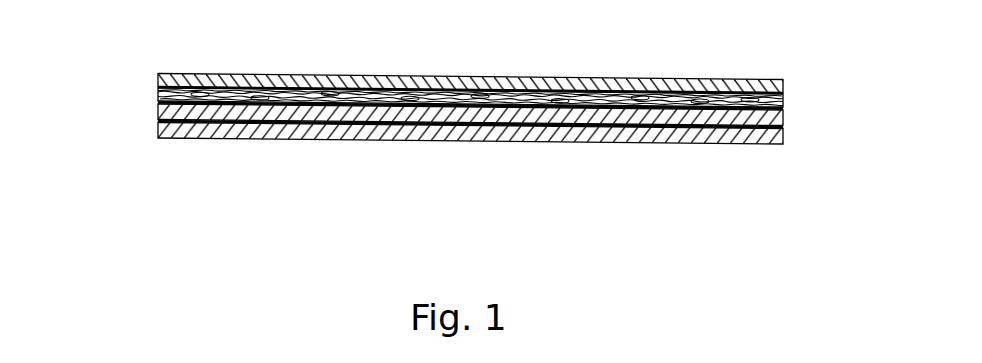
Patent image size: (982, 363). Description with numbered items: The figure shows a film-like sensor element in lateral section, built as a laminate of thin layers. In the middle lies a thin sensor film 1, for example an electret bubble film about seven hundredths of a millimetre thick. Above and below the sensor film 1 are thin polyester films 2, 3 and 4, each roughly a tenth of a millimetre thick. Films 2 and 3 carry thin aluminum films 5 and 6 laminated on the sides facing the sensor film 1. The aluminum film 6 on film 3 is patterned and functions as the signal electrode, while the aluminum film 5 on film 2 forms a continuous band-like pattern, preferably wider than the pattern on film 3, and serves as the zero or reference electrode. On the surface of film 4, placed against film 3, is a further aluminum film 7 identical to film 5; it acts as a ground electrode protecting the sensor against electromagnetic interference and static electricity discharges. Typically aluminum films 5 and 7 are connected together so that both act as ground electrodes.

The sensor film 1 is at (775, 103).
The polyester film 2 is at (782, 87).
The polyester film 3 is at (777, 119).
The polyester film 4 is at (778, 138).
The aluminum film 5 is at (158, 85).
The aluminum film 6 is at (158, 102).
The aluminum film 7 is at (158, 122).